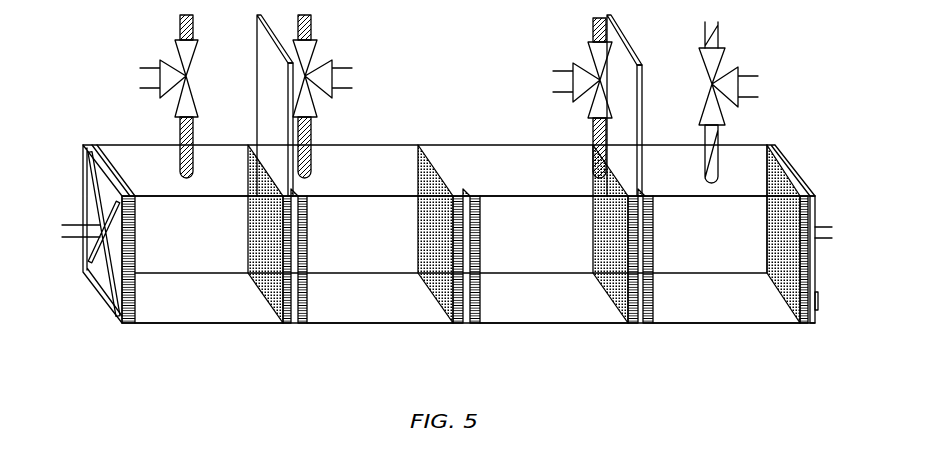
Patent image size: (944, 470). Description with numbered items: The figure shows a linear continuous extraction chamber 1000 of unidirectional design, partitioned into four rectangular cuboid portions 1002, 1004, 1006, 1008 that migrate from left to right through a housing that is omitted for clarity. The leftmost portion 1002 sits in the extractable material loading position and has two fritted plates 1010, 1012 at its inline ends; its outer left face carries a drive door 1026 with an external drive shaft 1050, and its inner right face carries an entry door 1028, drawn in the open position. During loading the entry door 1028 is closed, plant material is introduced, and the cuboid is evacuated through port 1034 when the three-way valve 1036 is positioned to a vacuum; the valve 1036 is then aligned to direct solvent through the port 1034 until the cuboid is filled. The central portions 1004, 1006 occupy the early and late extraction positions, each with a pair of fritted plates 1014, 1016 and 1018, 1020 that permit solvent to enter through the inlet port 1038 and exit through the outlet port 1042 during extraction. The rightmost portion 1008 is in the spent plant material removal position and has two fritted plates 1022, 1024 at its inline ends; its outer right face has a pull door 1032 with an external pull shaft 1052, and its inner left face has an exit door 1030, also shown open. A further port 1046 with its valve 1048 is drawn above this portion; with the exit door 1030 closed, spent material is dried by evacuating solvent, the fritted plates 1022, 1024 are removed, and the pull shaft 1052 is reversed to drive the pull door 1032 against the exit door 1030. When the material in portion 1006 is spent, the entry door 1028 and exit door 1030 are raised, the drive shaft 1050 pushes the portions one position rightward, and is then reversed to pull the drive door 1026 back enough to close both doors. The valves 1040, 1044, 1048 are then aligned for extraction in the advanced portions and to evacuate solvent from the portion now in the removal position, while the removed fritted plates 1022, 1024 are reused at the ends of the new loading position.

The linear continuous extraction chamber 1000 is at (462, 46).
The portion 1002 is at (173, 317).
The portion 1004 is at (345, 317).
The portion 1006 is at (515, 311).
The portion 1008 is at (678, 316).
The fritted plate 1010 is at (128, 326).
The fritted plate 1012 is at (288, 325).
The fritted plate 1014 is at (300, 323).
The fritted plate 1016 is at (460, 322).
The fritted plate 1018 is at (476, 325).
The fritted plate 1020 is at (632, 326).
The fritted plate 1022 is at (648, 327).
The fritted plate 1024 is at (803, 326).
The drive door 1026 is at (100, 283).
The entry door 1028 is at (260, 72).
The exit door 1030 is at (646, 88).
The pull door 1032 is at (812, 220).
The port 1034 is at (181, 163).
The 3-way valve 1036 is at (172, 67).
The inlet port 1038 is at (310, 162).
The valve 1040 is at (322, 66).
The outlet port 1042 is at (595, 162).
The valve 1044 is at (585, 72).
The fourth feed pipe 1046 is at (716, 170).
The valve 1048 is at (725, 72).
The drive shaft 1050 is at (60, 234).
The pull shaft 1052 is at (830, 237).